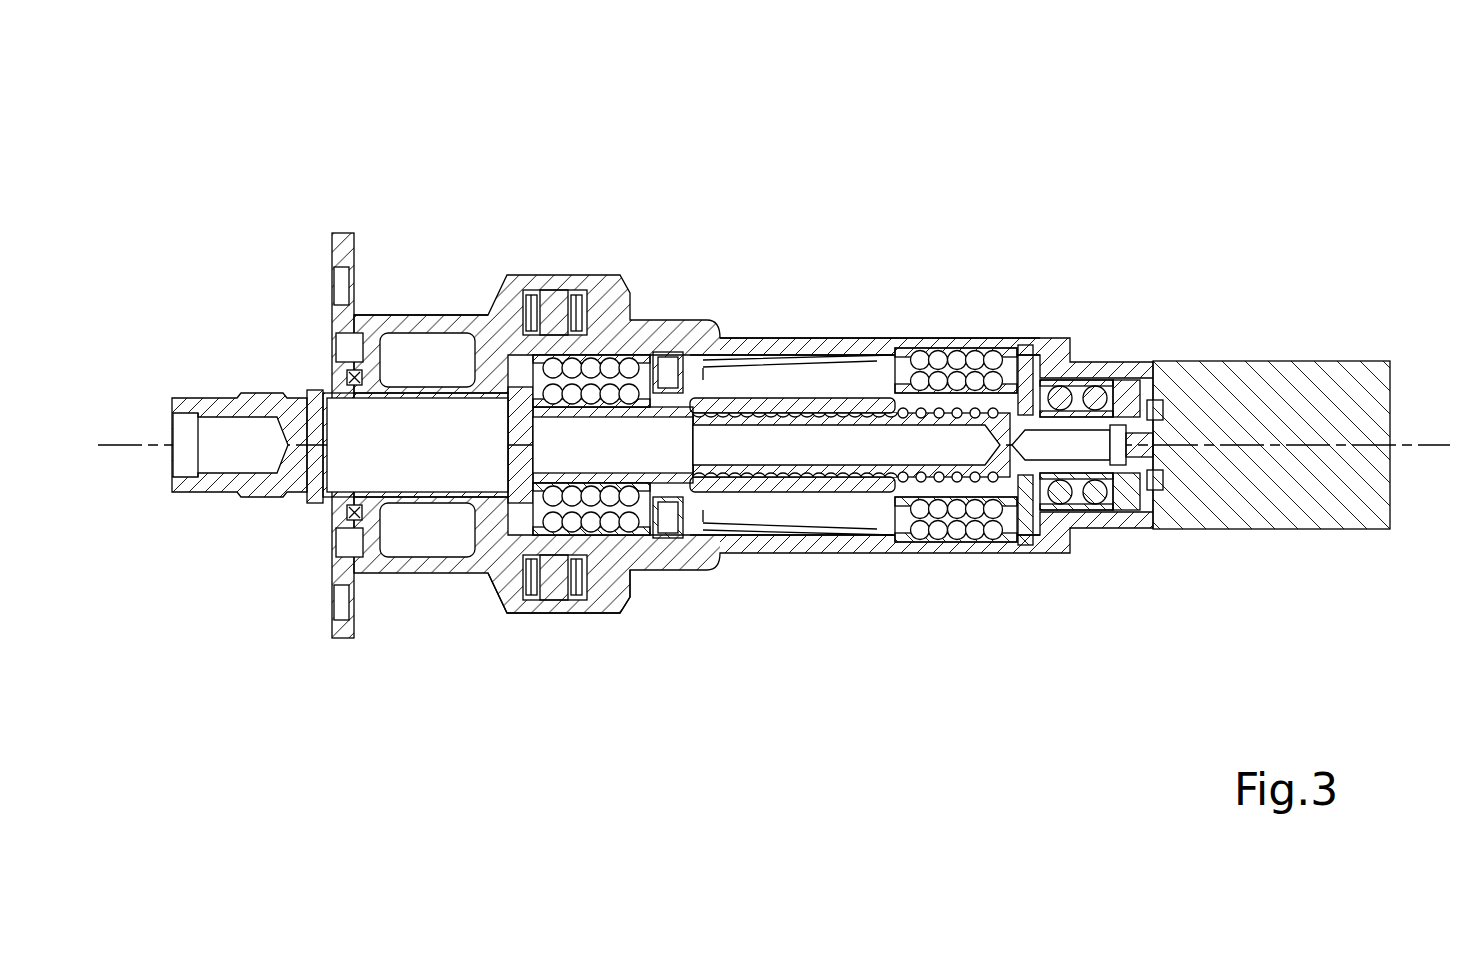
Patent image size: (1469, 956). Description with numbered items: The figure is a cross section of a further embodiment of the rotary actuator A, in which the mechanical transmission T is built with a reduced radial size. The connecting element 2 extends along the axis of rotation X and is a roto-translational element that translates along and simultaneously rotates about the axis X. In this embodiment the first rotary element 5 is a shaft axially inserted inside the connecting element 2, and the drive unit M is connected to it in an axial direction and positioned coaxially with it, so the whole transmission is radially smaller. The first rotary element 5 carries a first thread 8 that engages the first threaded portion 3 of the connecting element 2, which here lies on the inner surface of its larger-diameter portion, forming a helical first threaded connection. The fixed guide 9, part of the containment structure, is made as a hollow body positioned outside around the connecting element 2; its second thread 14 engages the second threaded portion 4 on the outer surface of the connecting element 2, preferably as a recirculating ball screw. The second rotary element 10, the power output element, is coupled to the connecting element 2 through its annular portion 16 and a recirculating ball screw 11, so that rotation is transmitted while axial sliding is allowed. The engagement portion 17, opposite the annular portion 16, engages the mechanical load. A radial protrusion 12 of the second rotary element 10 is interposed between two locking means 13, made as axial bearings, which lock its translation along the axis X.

The connecting element 2 is at (818, 403).
The first threaded portion 3 is at (898, 525).
The second threaded portion 4 is at (988, 368).
The first rotary element 5 is at (762, 480).
The first thread 8 is at (762, 412).
The fixed guide 9 is at (857, 527).
The second rotary element 10 is at (515, 322).
The recirculating ball screw 11 is at (610, 362).
The radial protrusion 12 is at (555, 300).
The locking means 13 is at (533, 298).
The second thread 14 is at (808, 510).
The annular portion 16 is at (620, 540).
The engagement portion 17 is at (323, 388).
The rotary actuator A is at (310, 178).
The mechanical transmission T is at (956, 258).
The drive unit M is at (1237, 297).
The axis of rotation X is at (135, 447).